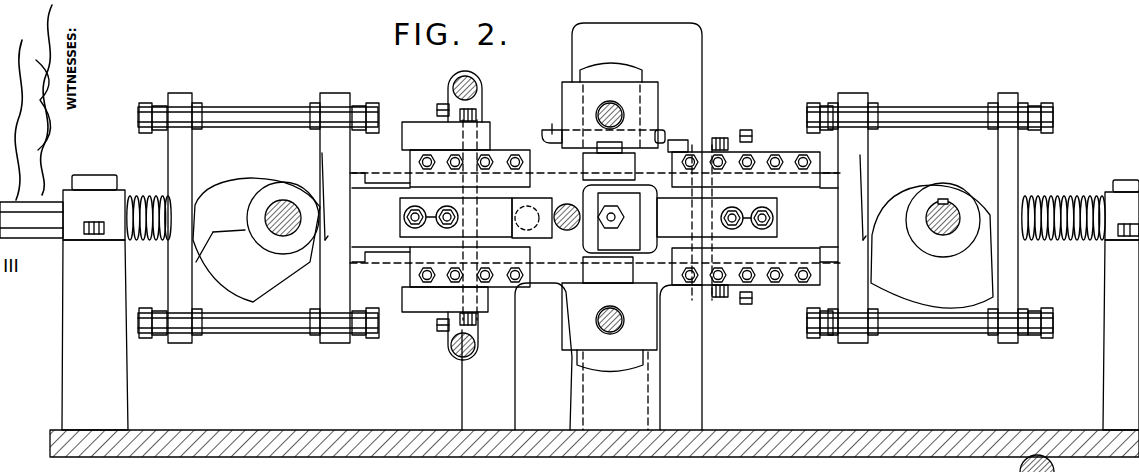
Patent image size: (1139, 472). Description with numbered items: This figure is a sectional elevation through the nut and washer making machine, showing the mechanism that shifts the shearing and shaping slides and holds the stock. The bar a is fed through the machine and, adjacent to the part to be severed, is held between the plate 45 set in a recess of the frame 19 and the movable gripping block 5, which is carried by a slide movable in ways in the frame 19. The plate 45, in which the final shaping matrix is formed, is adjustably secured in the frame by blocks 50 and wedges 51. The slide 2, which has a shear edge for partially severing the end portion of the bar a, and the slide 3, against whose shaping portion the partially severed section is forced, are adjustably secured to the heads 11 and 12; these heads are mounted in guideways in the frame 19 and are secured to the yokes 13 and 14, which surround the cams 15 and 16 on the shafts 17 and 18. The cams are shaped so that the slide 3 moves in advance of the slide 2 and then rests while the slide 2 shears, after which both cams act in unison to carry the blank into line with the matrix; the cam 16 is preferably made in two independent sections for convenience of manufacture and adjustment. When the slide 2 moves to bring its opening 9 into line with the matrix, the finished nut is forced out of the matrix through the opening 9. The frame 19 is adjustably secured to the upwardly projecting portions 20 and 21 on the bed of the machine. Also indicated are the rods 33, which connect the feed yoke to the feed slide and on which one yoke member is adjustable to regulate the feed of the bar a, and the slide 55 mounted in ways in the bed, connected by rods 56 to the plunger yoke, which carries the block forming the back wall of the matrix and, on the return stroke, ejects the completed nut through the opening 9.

The slide 2 is at (705, 224).
The slide 3 is at (503, 222).
The gripping block 5 is at (560, 233).
The opening 9 is at (628, 256).
The head 11 is at (788, 200).
The head 12 is at (367, 190).
The yoke 13 is at (858, 147).
The yoke 14 is at (262, 114).
The cam 15 is at (925, 288).
The cam 16 is at (250, 285).
The shaft 17 is at (948, 200).
The shaft 18 is at (282, 200).
The frame 19 is at (658, 96).
The upwardly projecting portion 20 is at (693, 60).
The upwardly projecting portion 21 is at (466, 392).
The rod 33 is at (454, 86).
The plate 45 is at (572, 258).
The block 50 is at (615, 163).
The wedge 51 is at (708, 133).
The slide 55 is at (613, 65).
The rod 56 is at (600, 112).
The bar a is at (563, 206).